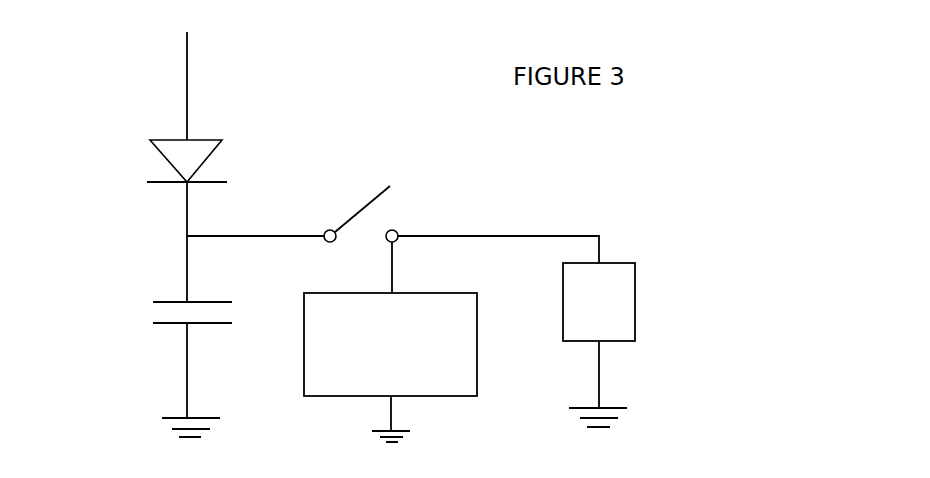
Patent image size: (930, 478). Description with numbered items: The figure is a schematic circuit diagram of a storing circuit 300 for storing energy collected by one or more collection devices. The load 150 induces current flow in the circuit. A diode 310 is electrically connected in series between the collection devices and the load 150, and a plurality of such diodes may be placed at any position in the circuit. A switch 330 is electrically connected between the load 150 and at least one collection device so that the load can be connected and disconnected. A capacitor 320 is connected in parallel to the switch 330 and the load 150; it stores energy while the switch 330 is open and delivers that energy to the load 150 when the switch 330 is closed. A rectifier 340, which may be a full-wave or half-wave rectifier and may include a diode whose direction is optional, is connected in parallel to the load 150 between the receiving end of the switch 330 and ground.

The storing circuit 300 is at (312, 96).
The diode 310 is at (177, 158).
The capacitor 320 is at (180, 315).
The switch 330 is at (407, 208).
The load 150 is at (449, 358).
The rectifier 340 is at (618, 315).